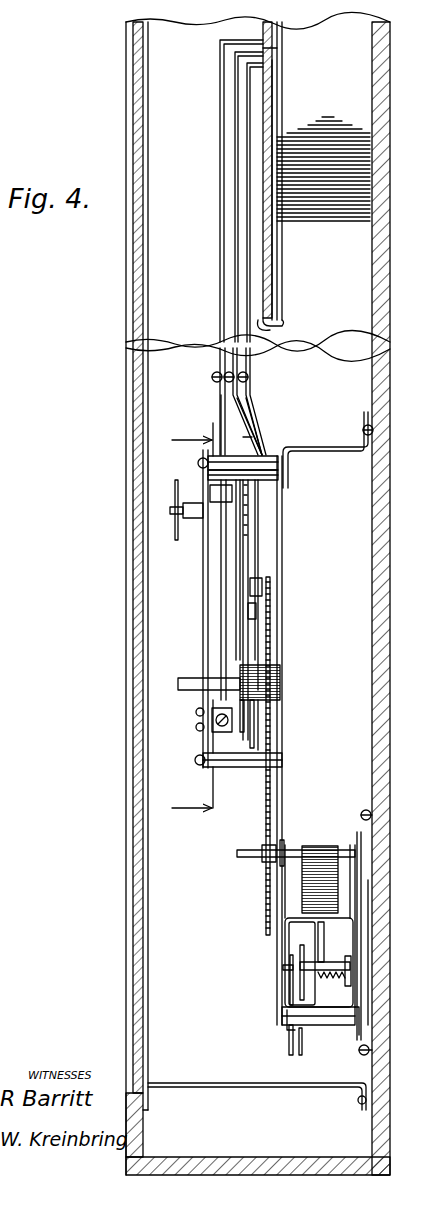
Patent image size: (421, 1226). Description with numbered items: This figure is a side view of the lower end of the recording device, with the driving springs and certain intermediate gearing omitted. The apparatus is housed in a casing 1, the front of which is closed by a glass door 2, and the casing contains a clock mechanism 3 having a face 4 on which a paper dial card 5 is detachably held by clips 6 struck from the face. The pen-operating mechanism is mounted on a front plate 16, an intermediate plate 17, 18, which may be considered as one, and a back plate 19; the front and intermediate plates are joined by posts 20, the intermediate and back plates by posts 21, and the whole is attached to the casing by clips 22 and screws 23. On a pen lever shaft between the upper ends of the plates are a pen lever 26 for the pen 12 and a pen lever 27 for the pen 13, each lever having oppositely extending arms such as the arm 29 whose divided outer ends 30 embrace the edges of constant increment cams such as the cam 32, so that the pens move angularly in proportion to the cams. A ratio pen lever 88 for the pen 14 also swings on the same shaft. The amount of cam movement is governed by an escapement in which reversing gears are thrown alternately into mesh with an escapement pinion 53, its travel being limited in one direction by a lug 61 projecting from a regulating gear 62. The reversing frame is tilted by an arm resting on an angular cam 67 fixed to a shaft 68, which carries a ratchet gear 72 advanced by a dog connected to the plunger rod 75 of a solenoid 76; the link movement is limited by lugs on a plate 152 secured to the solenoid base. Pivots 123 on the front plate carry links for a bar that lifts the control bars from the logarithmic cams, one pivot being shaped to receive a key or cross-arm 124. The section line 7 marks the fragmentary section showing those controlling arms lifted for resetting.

The casing 1 is at (374, 278).
The glass door 2 is at (135, 286).
The clock mechanism 3 is at (360, 122).
The face 4 is at (270, 262).
The dial card 5 is at (275, 237).
The clips 6 is at (275, 328).
The section line 7— 7 is at (192, 613).
The pen 12 is at (245, 137).
The pen 13 is at (236, 185).
The pen 14 is at (248, 228).
The front plate 16 is at (206, 582).
The intermediate plate 17 is at (279, 552).
The intermediate plate 18 is at (276, 940).
The back plate 19 is at (362, 892).
The posts 20 is at (258, 468).
The posts 21 is at (296, 845).
The clips 22 is at (315, 447).
The screws 23 is at (365, 426).
The pen lever 26 is at (248, 408).
The pen lever 27 is at (244, 426).
The arm 29 is at (259, 512).
The outer ends 30 is at (262, 582).
The cam 32 is at (250, 620).
The escapement pinion 53 is at (303, 1048).
The lug 61 is at (289, 1045).
The regulating gear 62 is at (287, 1030).
The angular cam 67 is at (302, 955).
The shaft 68 is at (283, 968).
The ratchet gear 72 is at (350, 965).
The plunger rod 75 is at (324, 936).
The solenoid 76 is at (320, 855).
The ratio pen lever 88 is at (220, 410).
The pivots 123 is at (175, 504).
The key or cross-arm 124 is at (178, 523).
The plate 152 is at (353, 935).